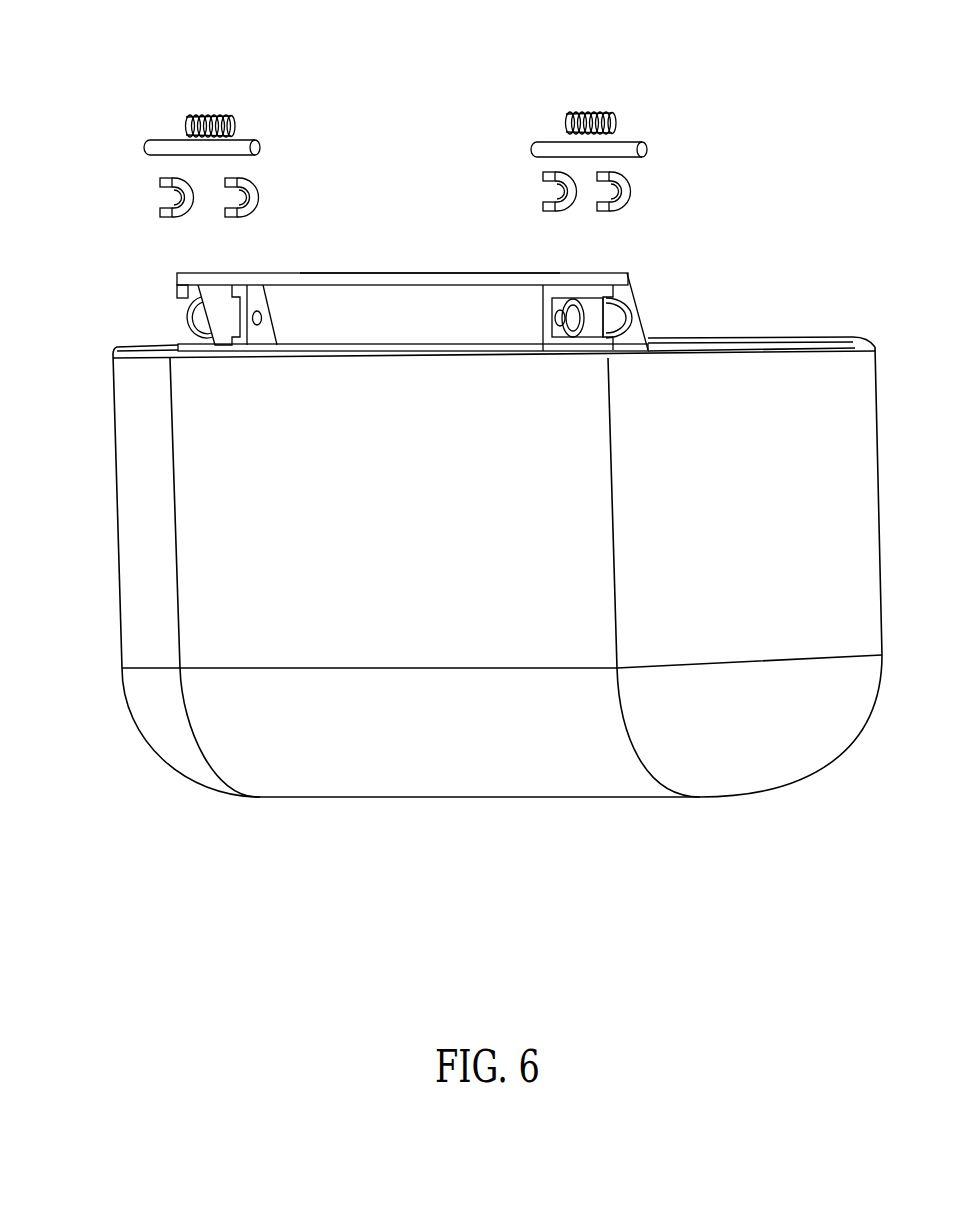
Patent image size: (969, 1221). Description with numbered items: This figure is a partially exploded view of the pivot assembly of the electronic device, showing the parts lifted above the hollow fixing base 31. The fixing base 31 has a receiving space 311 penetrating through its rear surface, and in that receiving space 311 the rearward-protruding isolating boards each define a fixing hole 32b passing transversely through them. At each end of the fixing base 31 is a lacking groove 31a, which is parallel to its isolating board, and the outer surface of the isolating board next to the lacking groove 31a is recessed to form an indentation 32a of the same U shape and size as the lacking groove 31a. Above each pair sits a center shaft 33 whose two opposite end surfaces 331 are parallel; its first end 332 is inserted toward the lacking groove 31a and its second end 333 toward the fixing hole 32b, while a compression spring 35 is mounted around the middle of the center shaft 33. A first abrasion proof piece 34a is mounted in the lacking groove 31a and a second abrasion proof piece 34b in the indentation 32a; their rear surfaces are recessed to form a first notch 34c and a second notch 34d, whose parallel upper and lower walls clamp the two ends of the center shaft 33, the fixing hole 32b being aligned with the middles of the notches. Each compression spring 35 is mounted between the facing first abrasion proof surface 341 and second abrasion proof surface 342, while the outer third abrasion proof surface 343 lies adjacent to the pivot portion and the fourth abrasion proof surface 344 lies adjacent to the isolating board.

The fixing base 31 is at (345, 288).
The receiving space 311 is at (430, 295).
The lacking groove 31a is at (197, 322).
The indentation 32a is at (582, 322).
The fixing hole 32b is at (263, 318).
The center shaft 33 is at (620, 142).
The end surface 331 is at (645, 148).
The first end 332 is at (145, 149).
The second end 333 is at (247, 141).
The first abrasion proof surface 341 is at (185, 219).
The second abrasion proof surface 342 is at (563, 208).
The third abrasion proof surface 343 is at (627, 187).
The fourth abrasion proof surface 344 is at (243, 187).
The first abrasion proof piece 34a is at (170, 218).
The second abrasion proof piece 34b is at (252, 218).
The first notch 34c is at (163, 200).
The second notch 34d is at (243, 200).
The compression spring 35 is at (201, 108).